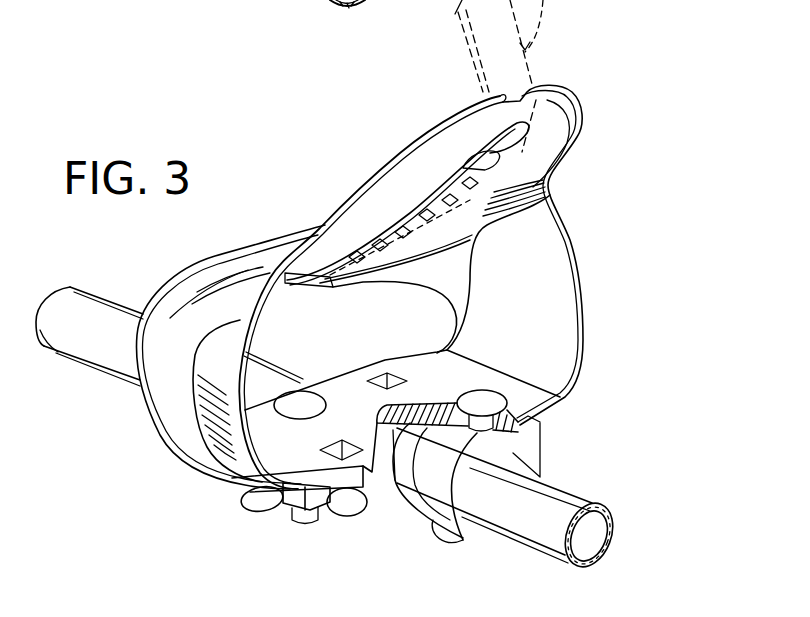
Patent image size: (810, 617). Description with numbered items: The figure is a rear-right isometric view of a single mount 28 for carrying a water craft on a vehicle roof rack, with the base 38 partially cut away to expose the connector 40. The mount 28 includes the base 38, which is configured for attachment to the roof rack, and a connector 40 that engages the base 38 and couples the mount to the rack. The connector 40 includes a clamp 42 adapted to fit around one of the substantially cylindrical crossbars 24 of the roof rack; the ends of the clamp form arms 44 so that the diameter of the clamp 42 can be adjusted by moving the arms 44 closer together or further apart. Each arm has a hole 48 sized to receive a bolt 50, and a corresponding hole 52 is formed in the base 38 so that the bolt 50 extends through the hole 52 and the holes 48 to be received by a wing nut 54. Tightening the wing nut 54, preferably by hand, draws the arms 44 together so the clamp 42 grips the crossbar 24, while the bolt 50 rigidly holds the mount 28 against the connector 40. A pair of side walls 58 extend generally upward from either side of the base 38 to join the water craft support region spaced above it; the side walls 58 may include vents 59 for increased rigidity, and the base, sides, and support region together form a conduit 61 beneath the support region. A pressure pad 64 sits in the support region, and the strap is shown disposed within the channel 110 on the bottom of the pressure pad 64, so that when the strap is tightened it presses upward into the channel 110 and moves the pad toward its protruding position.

The crossbar 24 is at (72, 343).
The mount 28 is at (340, 205).
The base 38 is at (540, 422).
The connector 40 is at (520, 452).
The clamp 42 is at (453, 497).
The arm 44 is at (262, 8).
The hole 48 is at (430, 477).
The bolt 50 is at (480, 393).
The hole 52 is at (390, 373).
The wing nut 54 is at (248, 500).
The side wall 58 is at (550, 290).
The vent 59 is at (160, 393).
The conduit 61 is at (311, 308).
The pressure pad 64 is at (435, 185).
The channel 110 is at (547, 185).